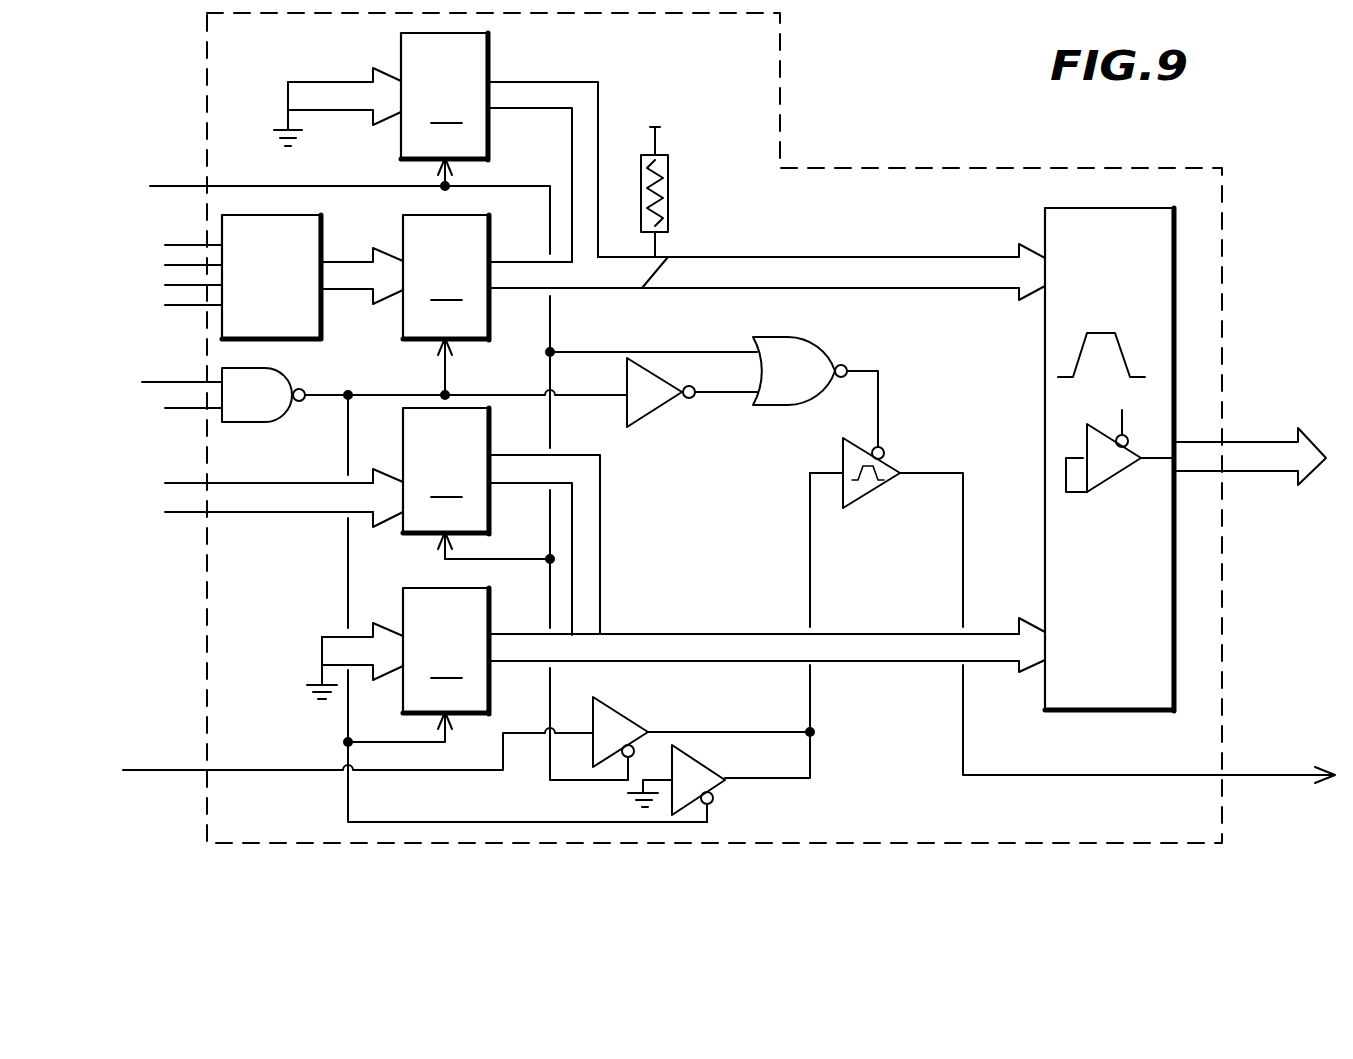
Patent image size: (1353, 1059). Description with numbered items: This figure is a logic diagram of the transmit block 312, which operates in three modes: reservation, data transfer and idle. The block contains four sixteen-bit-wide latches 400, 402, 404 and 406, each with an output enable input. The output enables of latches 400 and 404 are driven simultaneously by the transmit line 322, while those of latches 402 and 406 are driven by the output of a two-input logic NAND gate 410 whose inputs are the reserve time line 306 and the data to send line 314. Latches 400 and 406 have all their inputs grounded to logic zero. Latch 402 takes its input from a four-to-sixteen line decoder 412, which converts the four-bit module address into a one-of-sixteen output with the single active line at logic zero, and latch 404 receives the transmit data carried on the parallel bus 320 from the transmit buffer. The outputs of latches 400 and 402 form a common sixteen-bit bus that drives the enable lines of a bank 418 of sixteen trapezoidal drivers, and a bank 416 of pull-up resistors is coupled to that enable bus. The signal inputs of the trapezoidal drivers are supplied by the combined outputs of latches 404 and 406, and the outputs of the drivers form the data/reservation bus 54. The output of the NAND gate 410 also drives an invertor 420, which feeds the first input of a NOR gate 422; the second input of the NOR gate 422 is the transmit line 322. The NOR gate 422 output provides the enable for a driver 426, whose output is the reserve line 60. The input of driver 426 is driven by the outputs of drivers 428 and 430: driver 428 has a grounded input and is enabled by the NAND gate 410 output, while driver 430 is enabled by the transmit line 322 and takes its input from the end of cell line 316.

The transmit block 312 is at (962, 168).
The latch 400 is at (488, 52).
The latch 402 is at (489, 232).
The latch 404 is at (489, 425).
The latch 406 is at (490, 617).
The logic NAND gate 410 is at (283, 375).
The 4:16 line decoder 412 is at (322, 233).
The bank of pull-up resistors 416 is at (668, 198).
The bank of trapezoidal drivers 418 is at (1045, 318).
The invertor 420 is at (648, 415).
The NOR gate 422 is at (800, 338).
The driver 426 is at (870, 493).
The driver 428 is at (712, 765).
The driver 430 is at (632, 717).
The transmit line 322 is at (180, 188).
The reserve time signal 306 is at (180, 383).
The data to send line 314 is at (192, 410).
The end of cell line 316 is at (195, 772).
The parallel bus 320 is at (185, 515).
The data/reservation bus 54 is at (1272, 443).
The reserve line 60 is at (928, 472).